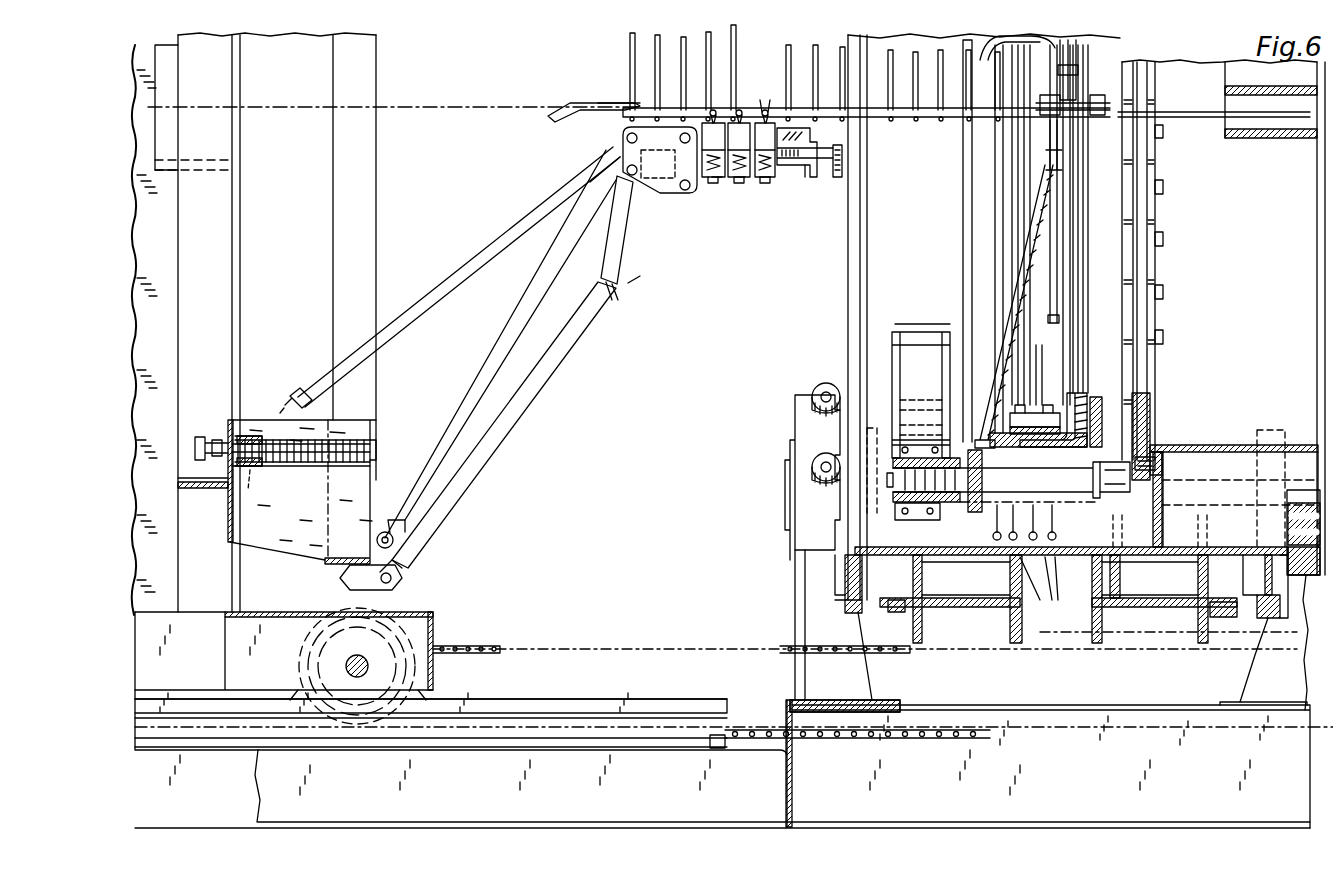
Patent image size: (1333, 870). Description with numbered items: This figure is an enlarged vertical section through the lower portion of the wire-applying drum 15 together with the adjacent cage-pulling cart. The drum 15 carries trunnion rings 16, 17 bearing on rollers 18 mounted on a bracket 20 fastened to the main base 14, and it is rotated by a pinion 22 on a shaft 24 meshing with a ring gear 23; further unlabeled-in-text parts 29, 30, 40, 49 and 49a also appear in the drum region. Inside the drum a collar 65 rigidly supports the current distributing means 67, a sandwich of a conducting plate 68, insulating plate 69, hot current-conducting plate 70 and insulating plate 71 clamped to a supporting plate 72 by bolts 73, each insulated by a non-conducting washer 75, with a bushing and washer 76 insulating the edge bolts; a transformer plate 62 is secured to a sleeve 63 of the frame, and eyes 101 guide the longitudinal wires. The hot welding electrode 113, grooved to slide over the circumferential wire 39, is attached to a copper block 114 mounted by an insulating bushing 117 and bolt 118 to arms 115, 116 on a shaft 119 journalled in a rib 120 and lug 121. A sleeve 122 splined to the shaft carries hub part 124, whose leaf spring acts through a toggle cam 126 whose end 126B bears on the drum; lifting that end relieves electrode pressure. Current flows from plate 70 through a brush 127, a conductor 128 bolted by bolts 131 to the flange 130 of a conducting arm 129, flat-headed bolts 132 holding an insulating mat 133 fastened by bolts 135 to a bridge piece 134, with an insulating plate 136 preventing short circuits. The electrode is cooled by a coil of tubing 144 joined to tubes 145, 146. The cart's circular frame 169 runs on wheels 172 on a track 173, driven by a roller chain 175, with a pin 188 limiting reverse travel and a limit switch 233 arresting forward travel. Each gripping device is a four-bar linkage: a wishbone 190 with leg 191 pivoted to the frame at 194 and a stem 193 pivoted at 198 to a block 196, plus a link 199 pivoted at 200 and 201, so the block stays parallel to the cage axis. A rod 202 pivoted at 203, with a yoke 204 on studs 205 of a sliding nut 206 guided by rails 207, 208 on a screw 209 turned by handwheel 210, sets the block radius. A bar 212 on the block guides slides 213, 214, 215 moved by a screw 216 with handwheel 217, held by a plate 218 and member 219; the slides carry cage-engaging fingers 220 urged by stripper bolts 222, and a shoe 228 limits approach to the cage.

The main base 14 is at (249, 800).
The drum 15 is at (1232, 57).
The trunnion ring 16 is at (845, 612).
The trunnion ring 17 is at (1270, 615).
The rollers 18 is at (1286, 430).
The bracket 20 is at (795, 529).
The pinion 22 is at (1303, 529).
The ring gear 23 is at (1302, 572).
The shaft 24 is at (1304, 539).
The column 29 is at (1018, 640).
The center line 30 is at (1205, 640).
The circumferential wire 39 is at (683, 55).
The axis line 40 is at (412, 112).
The bearing 49 is at (1225, 614).
The bearing 49a is at (895, 613).
The plate 62 is at (1268, 92).
The sleeve 63 is at (1268, 138).
The collar 65 is at (1235, 436).
The current distributing means 67 is at (1176, 227).
The conducting plate 68 is at (1165, 239).
The insulating plate 69 is at (1150, 258).
The current-conducting plate 70 is at (1140, 276).
The insulating plate 71 is at (1135, 296).
The supporting plate 72 is at (1165, 316).
The bolts 73 is at (1165, 188).
The non-conducting washer 75 is at (1158, 463).
The non-conducting bushing and washer 76 is at (1152, 452).
The eyes 101 is at (1060, 118).
The hot welding electrode 113 is at (1110, 38).
The block 114 is at (1050, 180).
The arm 115 is at (1035, 234).
The arm 116 is at (1080, 420).
The insulating bushing 117 is at (1085, 95).
The bolt 118 is at (1164, 134).
The shaft 119 is at (1112, 488).
The rib 120 is at (963, 161).
The lug 121 is at (1090, 555).
The sleeve 122 is at (948, 445).
The hub part 124 is at (912, 560).
The toggle cam 126 is at (895, 375).
The end of toggle cam 126B is at (900, 330).
The brush 127 is at (1158, 378).
The conductor 128 is at (1038, 412).
The conducting arm 129 is at (1076, 330).
The flange 130 is at (1030, 412).
The bolts 131 is at (1080, 380).
The flat-headed bolts 132 is at (1005, 462).
The insulating mat 133 is at (1090, 439).
The bridge piece 134 is at (996, 465).
The bolts 135 is at (992, 405).
The insulating plate 136 is at (1027, 504).
The coil of tubing 144 is at (1048, 614).
The tube 145 is at (1012, 262).
The tube 146 is at (1024, 285).
The circular frame 169 is at (384, 206).
The wheels 172 is at (388, 690).
The track 173 is at (572, 703).
The roller chain 175 is at (555, 632).
The pin 188 is at (452, 653).
The wishbone 190 is at (590, 357).
The leg 191 is at (502, 435).
The stem 193 is at (640, 252).
The pivot 194 is at (394, 580).
The block 196 is at (652, 190).
The pivot 198 is at (686, 193).
The link 199 is at (505, 345).
The pivot 200 is at (384, 530).
The pivot 201 is at (593, 188).
The rod 202 is at (450, 275).
The pivot 203 is at (622, 133).
The yoke 204 is at (282, 410).
The pivot studs 205 is at (257, 472).
The sliding nut 206 is at (262, 462).
The rail 207 is at (343, 425).
The rail 208 is at (362, 470).
The screw 209 is at (376, 440).
The handwheel 210 is at (200, 437).
The bar 212 is at (800, 135).
The slide 213 is at (713, 110).
The slide 214 is at (740, 108).
The slide 215 is at (766, 108).
The screw 216 is at (767, 185).
The handwheel 217 is at (837, 172).
The plate 218 is at (815, 168).
The member 219 is at (659, 164).
The cage-engaging finger 220 is at (772, 110).
The stripper bolt 222 is at (713, 184).
The shoe 228 is at (538, 108).
The limit switch 233 is at (740, 185).